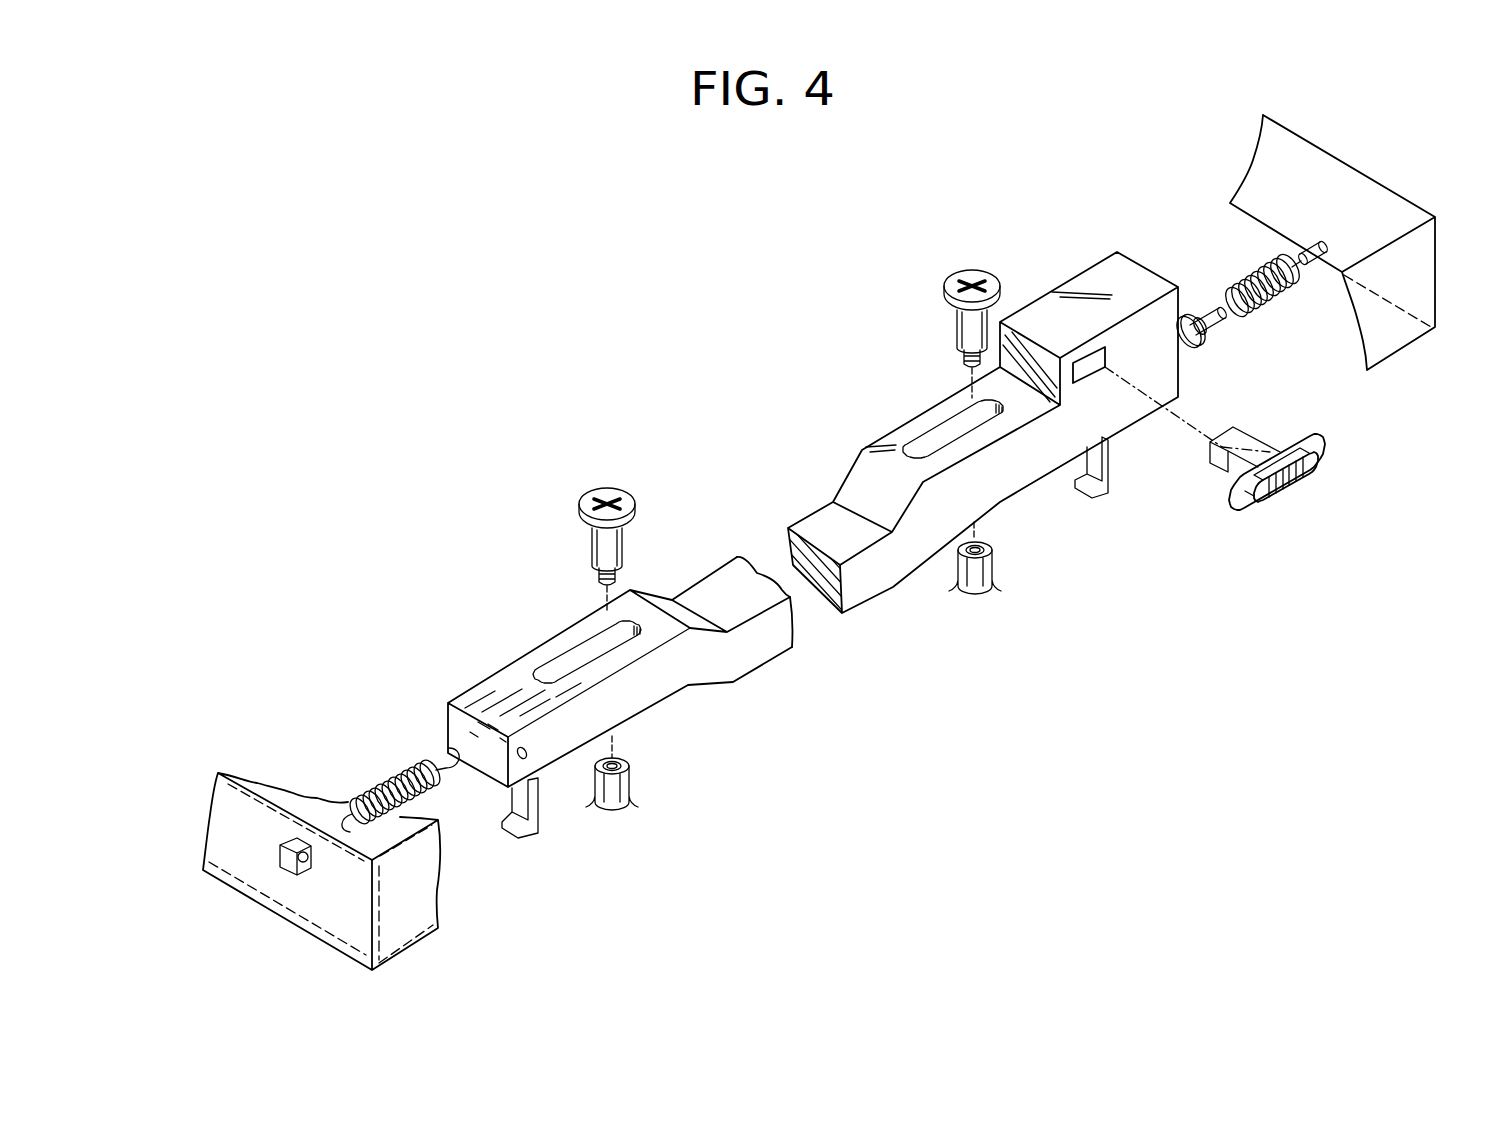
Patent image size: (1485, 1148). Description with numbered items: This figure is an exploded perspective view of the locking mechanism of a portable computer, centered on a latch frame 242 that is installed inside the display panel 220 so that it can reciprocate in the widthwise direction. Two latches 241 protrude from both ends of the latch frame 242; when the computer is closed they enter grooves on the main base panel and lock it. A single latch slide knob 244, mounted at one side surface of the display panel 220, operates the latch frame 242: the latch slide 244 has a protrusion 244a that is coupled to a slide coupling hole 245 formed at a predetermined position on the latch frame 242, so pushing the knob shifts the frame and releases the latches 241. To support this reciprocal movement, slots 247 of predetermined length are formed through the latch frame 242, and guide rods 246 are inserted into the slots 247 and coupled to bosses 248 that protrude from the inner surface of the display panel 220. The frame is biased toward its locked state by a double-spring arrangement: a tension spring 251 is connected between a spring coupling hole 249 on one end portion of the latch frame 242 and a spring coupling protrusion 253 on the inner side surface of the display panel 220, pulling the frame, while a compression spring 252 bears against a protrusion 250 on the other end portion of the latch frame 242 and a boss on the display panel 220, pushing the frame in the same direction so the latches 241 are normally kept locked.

The display panel 220 is at (291, 803).
The latch 241 is at (538, 830).
The latch frame 242 is at (714, 595).
The latch slide knob 244 is at (1292, 500).
The protrusion 244a is at (1222, 472).
The slide coupling hole 245 is at (1082, 360).
The guide rod 246 is at (626, 502).
The slot 247 is at (578, 652).
The boss 248 is at (613, 795).
The spring coupling hole 249 is at (520, 762).
The protrusion 250 is at (1196, 340).
The tension spring 251 is at (392, 770).
The compression spring 252 is at (1238, 272).
The spring coupling protrusion 253 is at (297, 866).